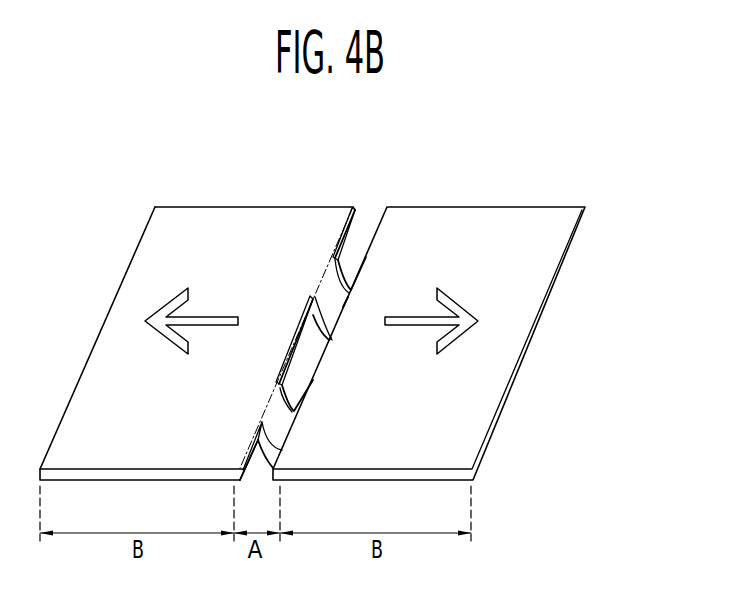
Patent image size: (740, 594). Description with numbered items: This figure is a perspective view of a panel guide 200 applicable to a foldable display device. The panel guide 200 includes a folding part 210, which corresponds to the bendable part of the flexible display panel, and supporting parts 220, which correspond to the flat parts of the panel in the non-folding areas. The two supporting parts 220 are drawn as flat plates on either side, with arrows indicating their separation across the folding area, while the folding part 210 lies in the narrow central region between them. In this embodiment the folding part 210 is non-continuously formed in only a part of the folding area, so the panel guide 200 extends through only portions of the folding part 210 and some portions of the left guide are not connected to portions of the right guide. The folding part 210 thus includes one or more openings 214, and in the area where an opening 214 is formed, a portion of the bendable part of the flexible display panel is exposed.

The panel guide 200 is at (563, 173).
The folding part 210 is at (342, 290).
The opening 214 is at (260, 465).
The supporting parts 220 is at (230, 208).